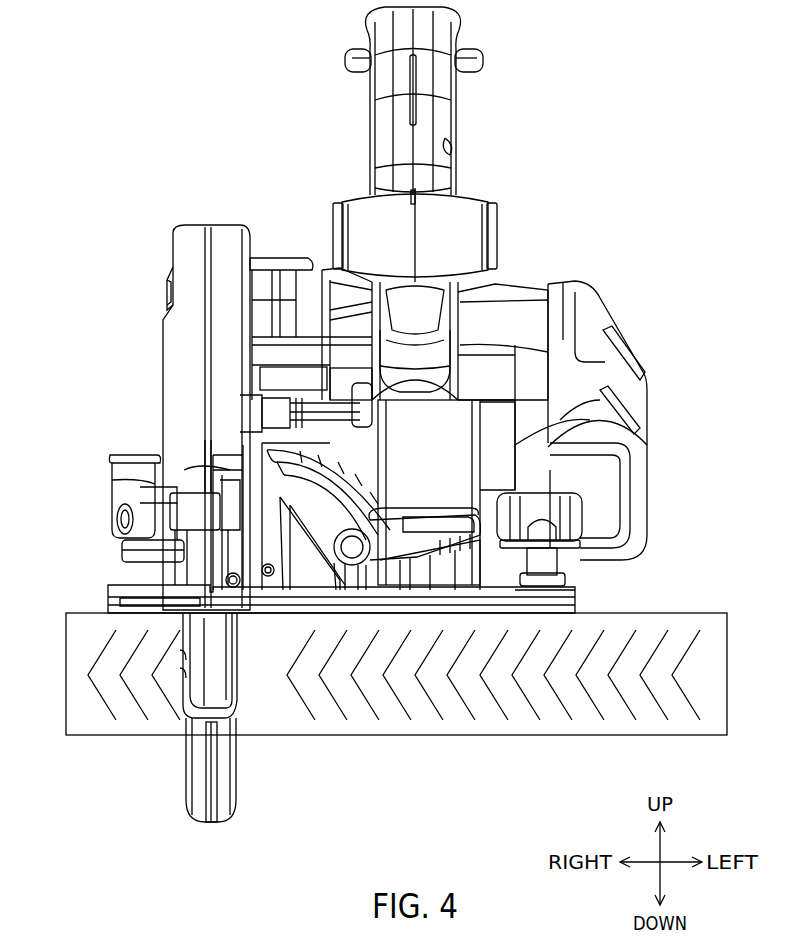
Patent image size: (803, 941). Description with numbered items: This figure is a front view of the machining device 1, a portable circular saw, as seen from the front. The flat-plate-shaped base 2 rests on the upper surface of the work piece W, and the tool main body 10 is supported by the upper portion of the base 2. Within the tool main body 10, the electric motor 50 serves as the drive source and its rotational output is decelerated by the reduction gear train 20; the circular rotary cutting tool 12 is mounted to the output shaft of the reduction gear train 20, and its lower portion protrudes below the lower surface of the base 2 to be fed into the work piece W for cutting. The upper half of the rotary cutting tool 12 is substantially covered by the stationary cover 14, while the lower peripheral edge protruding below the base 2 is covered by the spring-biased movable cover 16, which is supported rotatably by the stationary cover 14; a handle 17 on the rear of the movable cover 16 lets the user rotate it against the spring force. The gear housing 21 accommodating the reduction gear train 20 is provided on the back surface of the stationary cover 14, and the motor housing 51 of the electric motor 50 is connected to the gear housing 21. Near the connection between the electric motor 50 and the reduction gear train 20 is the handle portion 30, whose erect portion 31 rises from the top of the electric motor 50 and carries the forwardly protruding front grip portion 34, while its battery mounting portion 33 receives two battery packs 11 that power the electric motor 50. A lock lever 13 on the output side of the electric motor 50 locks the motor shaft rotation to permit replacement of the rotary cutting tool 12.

The machining device 1 is at (538, 188).
The base 2 is at (107, 595).
The tool main body 10 is at (318, 247).
The battery pack 11 is at (630, 356).
The rotary cutting tool 12 is at (212, 662).
The lock lever 13 is at (320, 393).
The stationary cover 14 is at (190, 240).
The movable cover 16 is at (220, 786).
The handle 17 is at (130, 470).
The reduction gear train 20 is at (218, 329).
The gear housing 21 is at (270, 355).
The handle portion 30 is at (425, 105).
The erect portion 31 is at (388, 133).
The battery mounting portion 33 is at (535, 290).
The front grip portion 34 is at (465, 232).
The electric motor 50 is at (576, 482).
The motor housing 51 is at (503, 450).
The work piece W is at (675, 613).